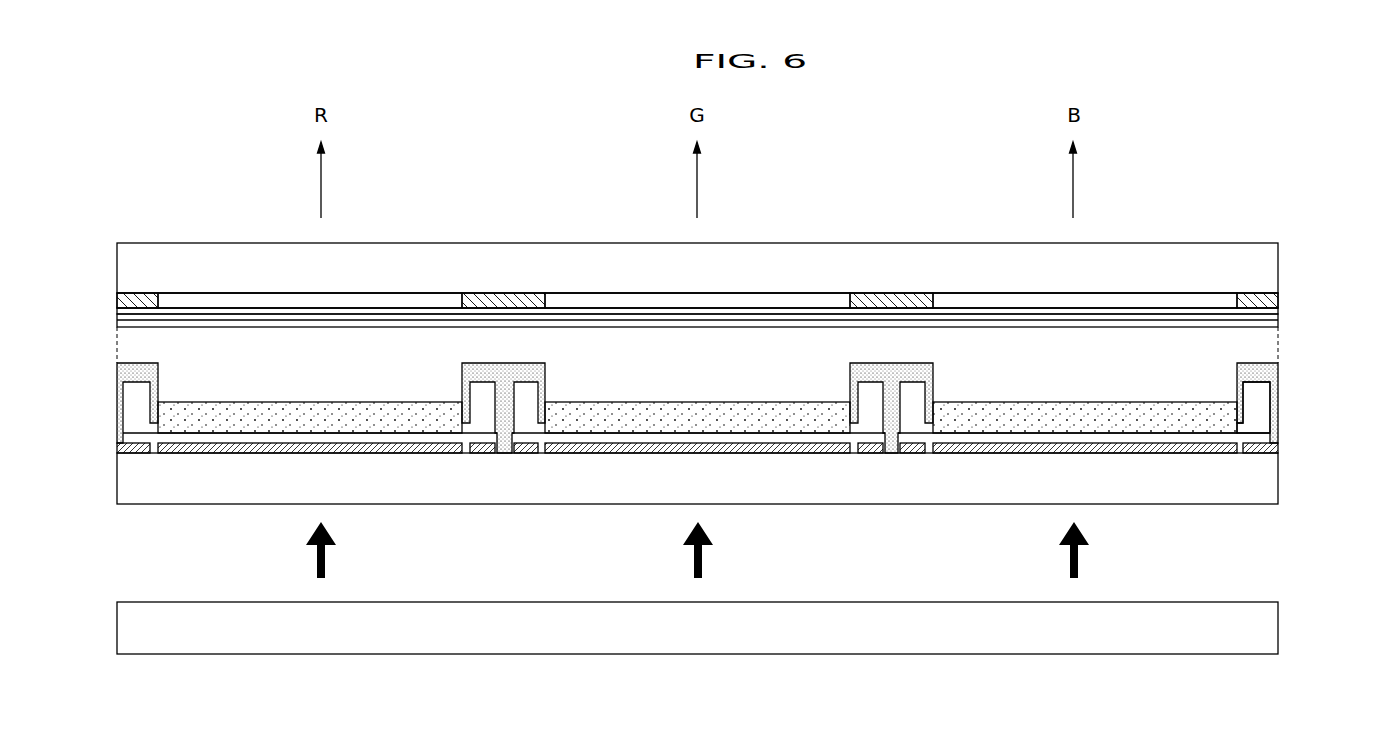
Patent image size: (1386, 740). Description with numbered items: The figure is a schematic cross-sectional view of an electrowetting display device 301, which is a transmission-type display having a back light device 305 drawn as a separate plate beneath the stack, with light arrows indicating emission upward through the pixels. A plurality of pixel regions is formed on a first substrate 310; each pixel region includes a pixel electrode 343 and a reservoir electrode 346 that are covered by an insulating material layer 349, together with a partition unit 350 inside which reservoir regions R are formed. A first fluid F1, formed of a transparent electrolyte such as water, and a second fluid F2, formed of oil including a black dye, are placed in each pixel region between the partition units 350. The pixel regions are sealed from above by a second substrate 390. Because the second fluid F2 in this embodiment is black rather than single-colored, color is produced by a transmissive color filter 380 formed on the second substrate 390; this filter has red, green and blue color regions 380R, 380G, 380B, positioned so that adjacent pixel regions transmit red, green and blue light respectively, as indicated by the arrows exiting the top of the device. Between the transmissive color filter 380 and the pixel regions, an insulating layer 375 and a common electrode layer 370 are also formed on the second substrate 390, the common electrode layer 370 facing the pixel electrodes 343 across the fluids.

The electrowetting display device 301 is at (1280, 196).
The back light device 305 is at (1268, 623).
The first substrate 310 is at (1268, 476).
The pixel electrode 343 is at (740, 455).
The reservoir electrode 346 is at (523, 453).
The insulating material layer 349 is at (795, 437).
The partition unit 350 is at (1258, 372).
The common electrode layer 370 is at (1268, 326).
The insulating layer 375 is at (1268, 316).
The transmissive color filter 380 is at (1270, 302).
The red color region 380R is at (370, 300).
The green color region 380G is at (743, 300).
The blue color region 380B is at (1123, 300).
The second substrate 390 is at (1268, 257).
The reservoir region R is at (1257, 402).
The first fluid F1 is at (708, 368).
The second fluid F2 is at (708, 431).